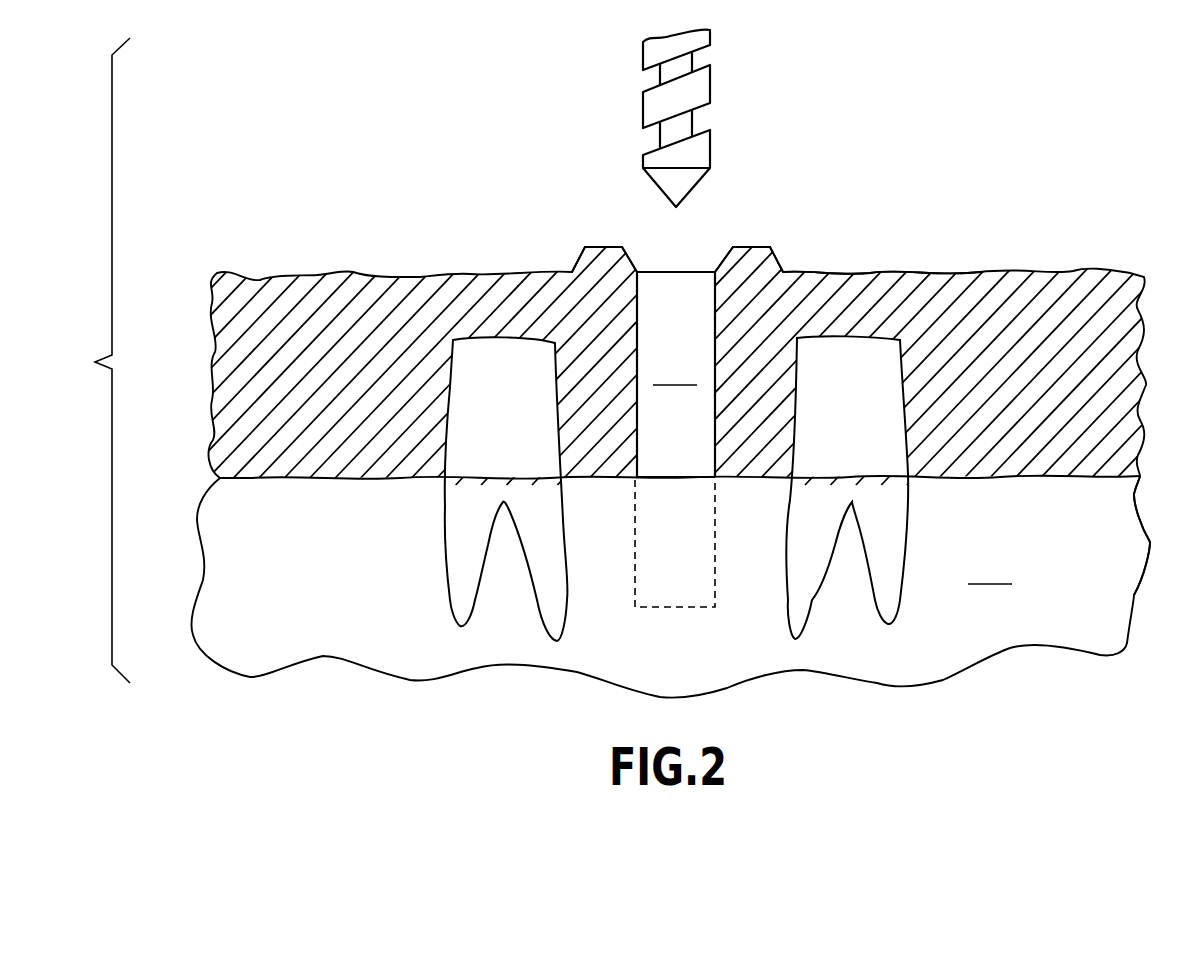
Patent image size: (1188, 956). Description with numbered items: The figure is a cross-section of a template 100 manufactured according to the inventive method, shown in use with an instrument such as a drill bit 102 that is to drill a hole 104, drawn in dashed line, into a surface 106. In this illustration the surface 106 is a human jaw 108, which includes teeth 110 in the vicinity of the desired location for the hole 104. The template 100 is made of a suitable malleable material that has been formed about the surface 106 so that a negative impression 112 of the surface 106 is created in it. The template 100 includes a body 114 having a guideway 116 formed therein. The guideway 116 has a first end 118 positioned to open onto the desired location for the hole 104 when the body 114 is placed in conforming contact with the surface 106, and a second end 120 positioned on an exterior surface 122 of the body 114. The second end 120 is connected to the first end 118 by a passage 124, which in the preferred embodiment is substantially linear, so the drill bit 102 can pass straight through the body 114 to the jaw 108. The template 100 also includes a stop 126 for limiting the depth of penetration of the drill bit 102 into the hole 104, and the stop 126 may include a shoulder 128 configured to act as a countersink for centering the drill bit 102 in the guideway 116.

The template 100 is at (1071, 225).
The drill bit 102 is at (697, 92).
The hole 104 is at (677, 607).
The surface 106 is at (583, 474).
The human jaw 108 is at (670, 587).
The teeth 110 is at (478, 340).
The negative impression 112 is at (1083, 476).
The body 114 is at (337, 297).
The guideway 116 is at (680, 292).
The first end 118 is at (662, 475).
The second end 120 is at (667, 273).
The exterior surface 122 is at (890, 268).
The passage 124 is at (675, 369).
The stop 126 is at (773, 258).
The shoulder 128 is at (637, 270).